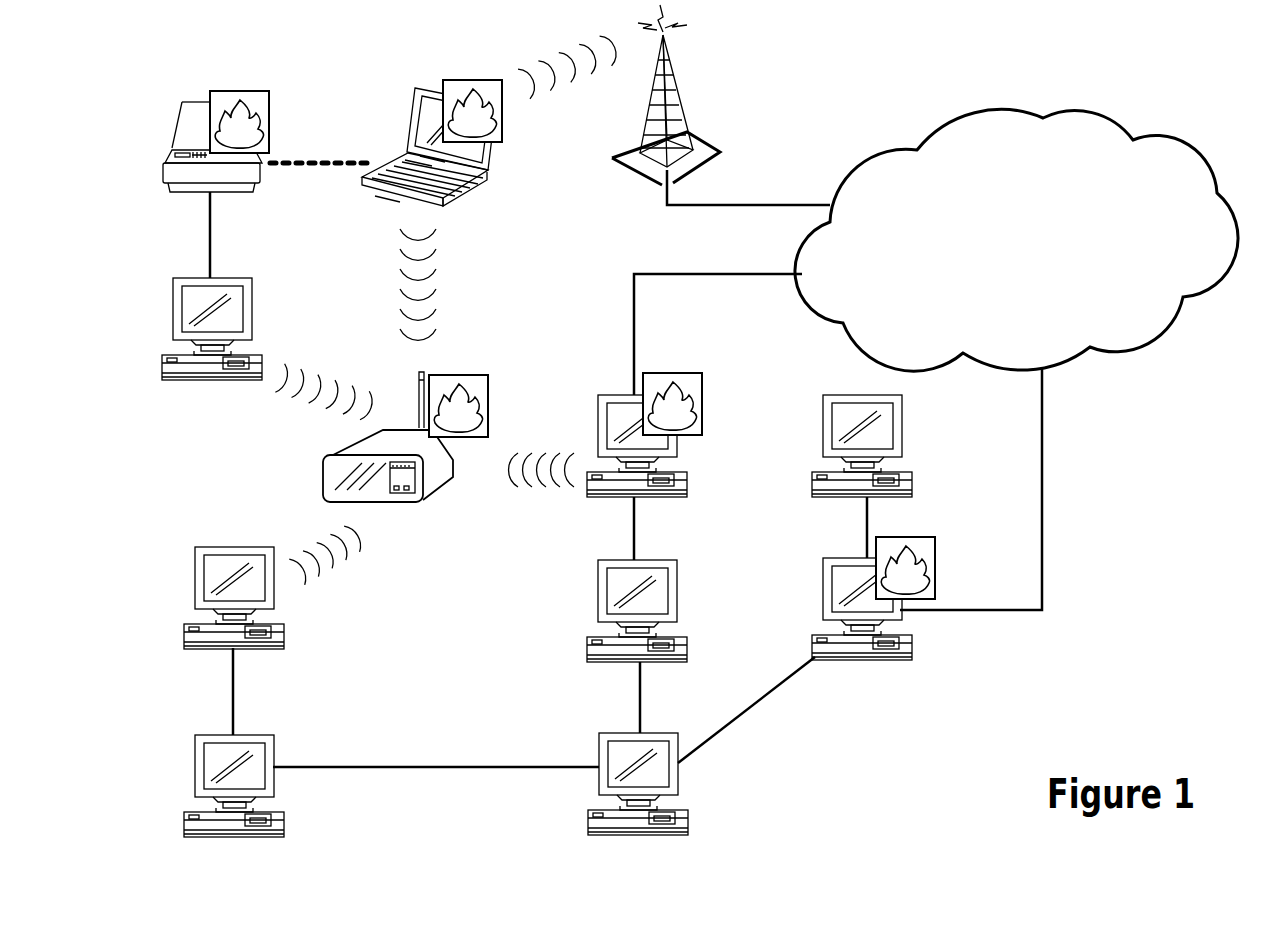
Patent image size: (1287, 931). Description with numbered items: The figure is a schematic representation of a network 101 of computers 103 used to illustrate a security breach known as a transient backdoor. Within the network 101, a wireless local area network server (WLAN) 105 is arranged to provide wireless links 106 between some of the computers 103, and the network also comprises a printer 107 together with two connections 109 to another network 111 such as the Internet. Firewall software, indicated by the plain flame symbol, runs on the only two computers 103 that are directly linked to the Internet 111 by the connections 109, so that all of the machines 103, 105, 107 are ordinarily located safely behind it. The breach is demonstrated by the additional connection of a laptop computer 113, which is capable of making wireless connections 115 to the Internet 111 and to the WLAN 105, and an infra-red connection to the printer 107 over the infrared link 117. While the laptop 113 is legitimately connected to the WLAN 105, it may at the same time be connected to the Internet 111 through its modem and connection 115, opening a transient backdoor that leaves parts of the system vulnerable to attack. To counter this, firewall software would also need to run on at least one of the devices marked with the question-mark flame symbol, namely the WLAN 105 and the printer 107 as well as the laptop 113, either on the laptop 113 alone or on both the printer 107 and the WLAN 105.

The network 101 is at (1115, 520).
The computers 103 is at (180, 302).
The wireless local area network server (WLAN) 105 is at (335, 480).
The wireless links 106 is at (328, 385).
The printer 107 is at (187, 128).
The connections 109 is at (633, 305).
The another network (the Internet) 111 is at (1193, 145).
The laptop computer 113 is at (430, 118).
The wireless connections 115 is at (555, 87).
The infrared link 117 is at (303, 160).